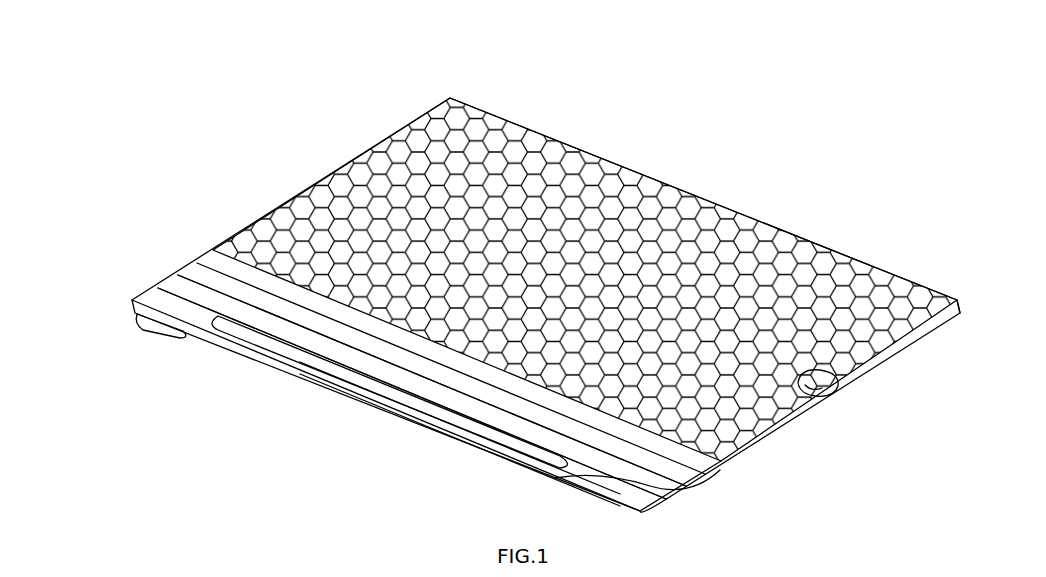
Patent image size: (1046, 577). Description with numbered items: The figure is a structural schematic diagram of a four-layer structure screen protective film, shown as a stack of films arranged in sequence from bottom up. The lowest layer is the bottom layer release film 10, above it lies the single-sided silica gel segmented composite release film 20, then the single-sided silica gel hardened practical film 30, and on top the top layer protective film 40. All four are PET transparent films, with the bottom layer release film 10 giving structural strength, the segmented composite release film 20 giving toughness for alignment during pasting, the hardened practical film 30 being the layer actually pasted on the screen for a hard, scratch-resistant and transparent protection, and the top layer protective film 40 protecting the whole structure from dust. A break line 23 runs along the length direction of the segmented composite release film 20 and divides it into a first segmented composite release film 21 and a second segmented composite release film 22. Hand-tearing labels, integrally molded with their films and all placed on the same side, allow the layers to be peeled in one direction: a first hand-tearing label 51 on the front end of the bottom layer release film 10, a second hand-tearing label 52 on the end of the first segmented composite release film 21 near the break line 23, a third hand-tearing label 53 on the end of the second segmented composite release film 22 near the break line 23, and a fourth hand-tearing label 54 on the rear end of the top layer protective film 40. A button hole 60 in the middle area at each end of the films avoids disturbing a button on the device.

The bottom layer release film 10 is at (135, 298).
The single-sided silica gel segmented composite release film 20 is at (115, 95).
The first segmented composite release film 21 is at (203, 257).
The second segmented composite release film 22 is at (420, 403).
The break line 23 is at (384, 394).
The single-sided silica gel hardened practical film 30 is at (448, 392).
The top layer protective film 40 is at (628, 445).
The first hand-tearing label 51 is at (172, 338).
The second hand-tearing label 52 is at (338, 368).
The third hand-tearing label 53 is at (458, 418).
The fourth hand-tearing label 54 is at (555, 478).
The button hole 60 is at (817, 378).